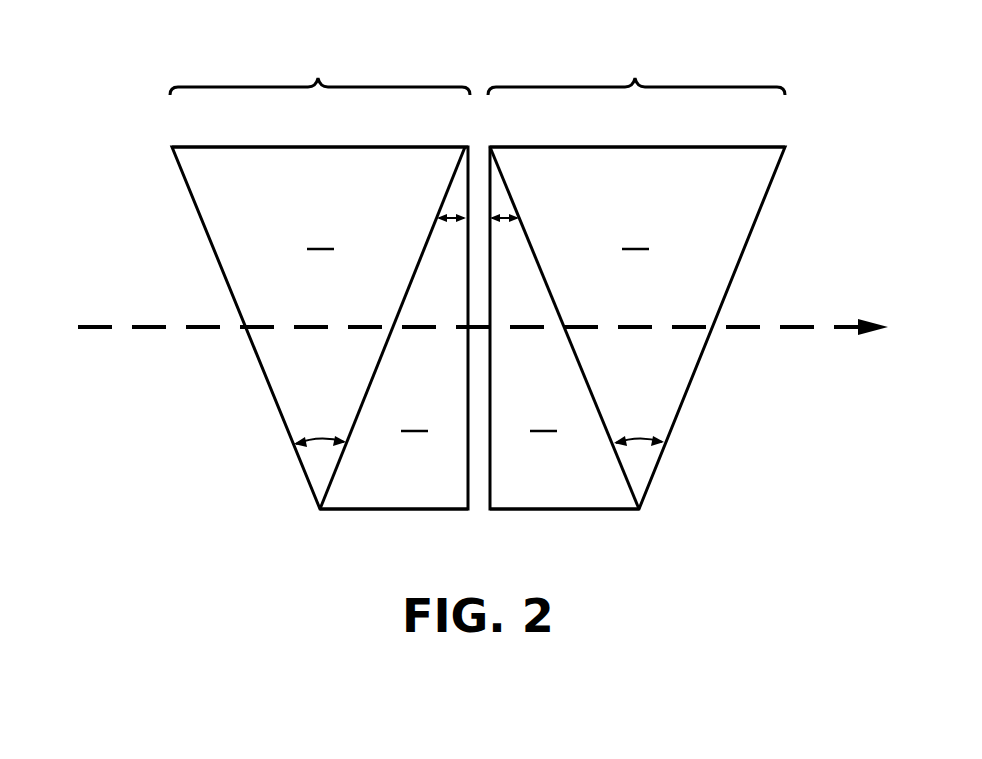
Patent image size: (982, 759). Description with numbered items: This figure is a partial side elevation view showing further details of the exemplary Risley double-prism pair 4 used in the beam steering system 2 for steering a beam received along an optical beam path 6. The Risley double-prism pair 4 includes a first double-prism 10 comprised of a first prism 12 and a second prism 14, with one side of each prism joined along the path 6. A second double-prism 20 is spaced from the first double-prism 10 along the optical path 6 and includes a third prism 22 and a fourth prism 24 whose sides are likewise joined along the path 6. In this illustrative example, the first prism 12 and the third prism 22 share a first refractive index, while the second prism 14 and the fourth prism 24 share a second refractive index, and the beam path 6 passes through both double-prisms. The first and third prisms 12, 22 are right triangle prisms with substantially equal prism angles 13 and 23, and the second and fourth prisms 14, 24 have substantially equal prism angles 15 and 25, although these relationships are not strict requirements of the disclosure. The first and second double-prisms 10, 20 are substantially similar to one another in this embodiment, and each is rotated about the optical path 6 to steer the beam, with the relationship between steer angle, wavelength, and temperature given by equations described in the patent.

The beam steering system 2 is at (86, 70).
The Risley double-prism pair 4 is at (172, 431).
The optical beam path 6 is at (96, 329).
The first double-prism 10 is at (318, 77).
The first prism 12 is at (393, 510).
The prism angle 13 is at (445, 216).
The second prism 14 is at (318, 146).
The prism angle 15 is at (302, 465).
The second double-prism 20 is at (633, 77).
The third prism 22 is at (560, 510).
The prism angle 23 is at (510, 216).
The fourth prism 24 is at (632, 146).
The prism angle 25 is at (657, 465).